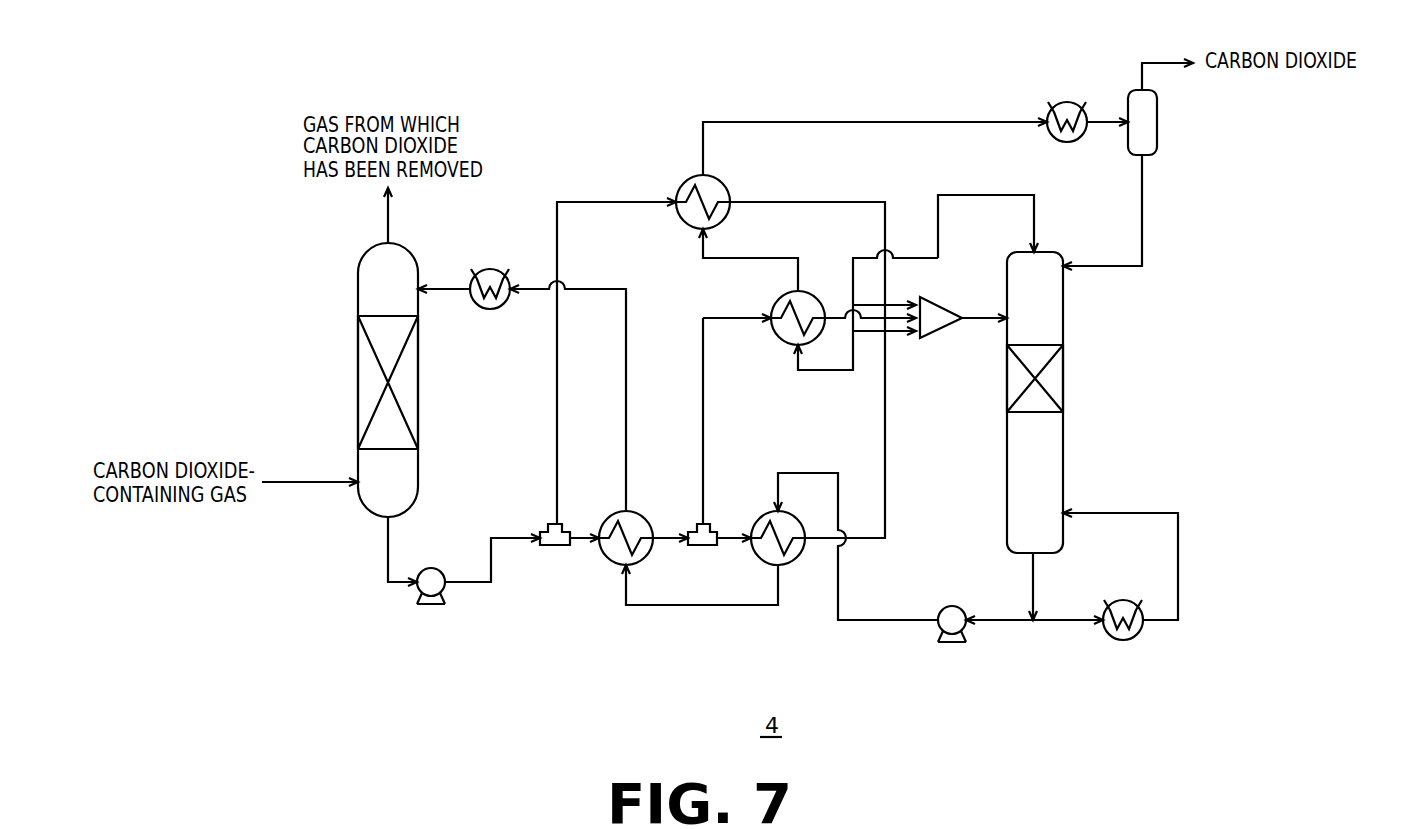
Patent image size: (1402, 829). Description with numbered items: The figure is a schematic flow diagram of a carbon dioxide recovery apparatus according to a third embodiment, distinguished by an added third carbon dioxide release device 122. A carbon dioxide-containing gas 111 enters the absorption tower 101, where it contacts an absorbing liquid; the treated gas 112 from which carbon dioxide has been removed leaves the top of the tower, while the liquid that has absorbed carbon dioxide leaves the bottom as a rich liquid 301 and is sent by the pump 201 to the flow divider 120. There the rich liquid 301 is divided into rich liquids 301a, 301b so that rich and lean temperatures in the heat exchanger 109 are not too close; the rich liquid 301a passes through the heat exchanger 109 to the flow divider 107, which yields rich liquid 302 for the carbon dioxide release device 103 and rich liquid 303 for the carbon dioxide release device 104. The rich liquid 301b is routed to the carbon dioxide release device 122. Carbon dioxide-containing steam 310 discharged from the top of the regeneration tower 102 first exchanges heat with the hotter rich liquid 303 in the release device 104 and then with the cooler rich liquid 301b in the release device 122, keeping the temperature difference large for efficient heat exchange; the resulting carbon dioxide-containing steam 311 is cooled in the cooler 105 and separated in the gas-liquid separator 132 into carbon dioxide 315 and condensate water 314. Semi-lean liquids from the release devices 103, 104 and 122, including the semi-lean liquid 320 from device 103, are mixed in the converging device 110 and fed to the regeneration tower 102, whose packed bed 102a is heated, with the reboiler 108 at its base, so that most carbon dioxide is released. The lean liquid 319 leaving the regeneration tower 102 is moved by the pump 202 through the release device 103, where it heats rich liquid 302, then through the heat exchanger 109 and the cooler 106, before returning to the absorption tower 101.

The absorption tower 101 is at (358, 290).
The regeneration tower 102 is at (1063, 300).
The packed bed 102a is at (1063, 380).
The carbon dioxide release device 103 is at (797, 560).
The carbon dioxide release device 104 is at (773, 300).
The cooler 105 is at (1065, 143).
The cooler 106 is at (488, 268).
The flow divider 107 is at (699, 548).
The reboiler 108 is at (1126, 640).
The heat exchanger 109 is at (648, 516).
The converging device 110 is at (940, 330).
The carbon dioxide-containing gas 111 is at (302, 478).
The gas from which carbon dioxide has been removed 112 is at (388, 222).
The flow divider 120 is at (557, 548).
The carbon dioxide release device 122 is at (686, 183).
The gas-liquid separator 132 is at (1157, 121).
The pump 201 is at (434, 568).
The pump 202 is at (946, 606).
The rich liquid 301 is at (502, 588).
The rich liquid 301a is at (569, 525).
The rich liquid 301b is at (557, 393).
The rich liquid 302 is at (727, 535).
The rich liquid 303 is at (703, 409).
The carbon dioxide-containing steam 310 is at (971, 195).
The carbon dioxide-containing steam 311 is at (780, 122).
The condensate water 314 is at (1142, 225).
The carbon dioxide 315 is at (1142, 62).
The lean liquid 319 is at (452, 291).
The semi-lean liquid 320 is at (885, 437).